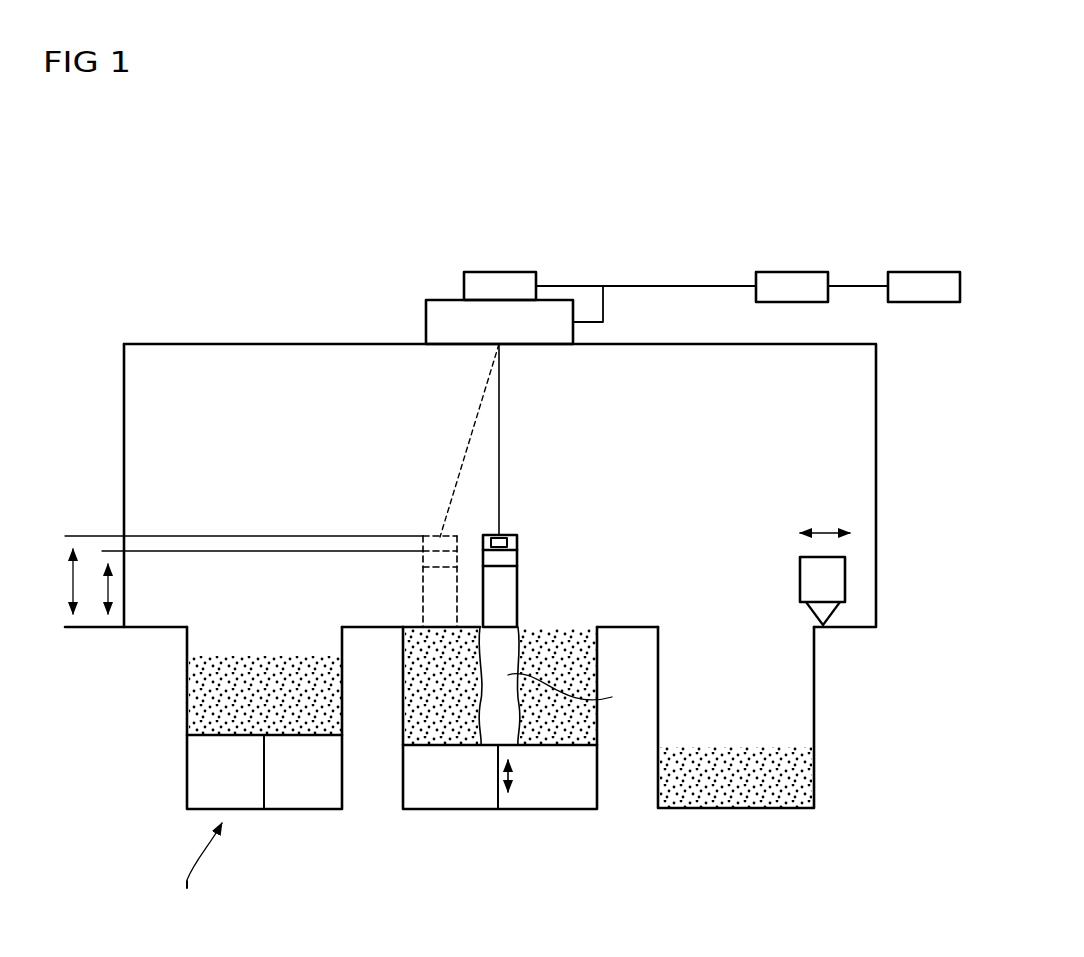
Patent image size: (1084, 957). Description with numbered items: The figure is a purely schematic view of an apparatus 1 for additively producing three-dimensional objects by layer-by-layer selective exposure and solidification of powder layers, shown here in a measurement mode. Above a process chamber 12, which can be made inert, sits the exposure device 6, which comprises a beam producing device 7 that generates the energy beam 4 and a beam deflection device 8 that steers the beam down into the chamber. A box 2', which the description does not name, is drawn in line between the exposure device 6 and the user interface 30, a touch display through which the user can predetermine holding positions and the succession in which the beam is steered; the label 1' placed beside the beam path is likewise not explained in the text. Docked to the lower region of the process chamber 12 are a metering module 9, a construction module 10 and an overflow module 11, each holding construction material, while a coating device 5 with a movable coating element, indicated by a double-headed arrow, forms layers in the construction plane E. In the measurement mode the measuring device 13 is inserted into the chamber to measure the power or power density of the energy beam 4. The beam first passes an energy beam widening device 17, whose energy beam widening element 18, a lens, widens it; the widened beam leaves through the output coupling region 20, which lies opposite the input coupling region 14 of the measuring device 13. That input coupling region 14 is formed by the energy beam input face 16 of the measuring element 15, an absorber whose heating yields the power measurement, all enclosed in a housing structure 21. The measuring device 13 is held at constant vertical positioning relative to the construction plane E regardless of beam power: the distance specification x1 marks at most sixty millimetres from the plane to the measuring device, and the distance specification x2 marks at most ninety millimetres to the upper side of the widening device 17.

The apparatus 1 is at (507, 340).
The control device 2' is at (715, 250).
The energy beam 4 is at (501, 385).
The coating device 5 is at (784, 561).
The exposure device 6 is at (427, 271).
The beam producing device 7 is at (497, 271).
The beam deflection device 8 is at (425, 325).
The metering module 9 is at (242, 757).
The construction module 10 is at (452, 825).
The overflow module 11 is at (700, 825).
The process chamber 12 is at (877, 470).
The measuring device 13 is at (529, 511).
The input coupling region 14 is at (549, 572).
The measuring element 15 is at (478, 538).
The energy beam input face 16 is at (518, 552).
The energy beam widening device 17 is at (472, 520).
The energy beam widening element 18 is at (476, 521).
The output coupling region 20 is at (518, 538).
The housing structure 21 is at (518, 605).
The user interface 30 is at (922, 271).
The beam axis 1' is at (515, 478).
The distance specification x1 is at (253, 582).
The distance specification x2 is at (232, 575).
The construction plane E is at (398, 620).